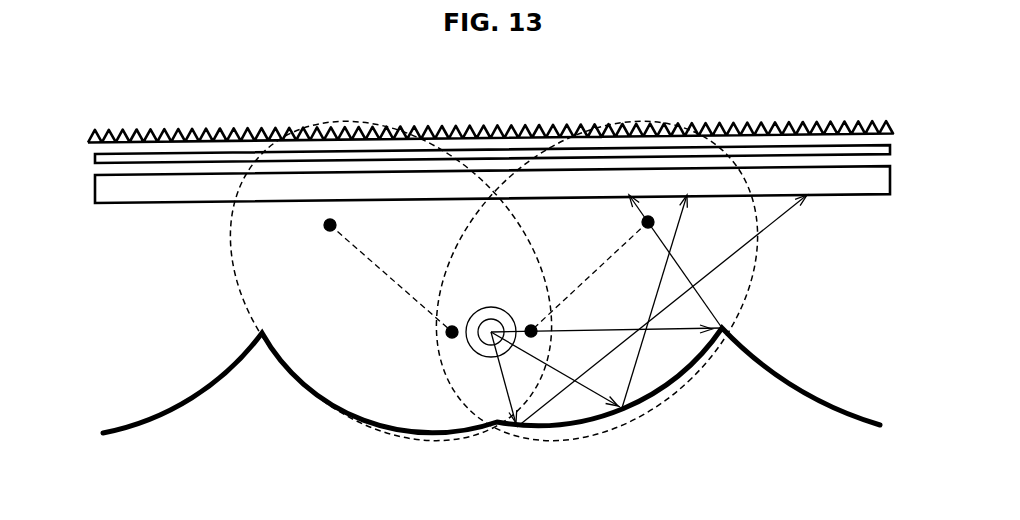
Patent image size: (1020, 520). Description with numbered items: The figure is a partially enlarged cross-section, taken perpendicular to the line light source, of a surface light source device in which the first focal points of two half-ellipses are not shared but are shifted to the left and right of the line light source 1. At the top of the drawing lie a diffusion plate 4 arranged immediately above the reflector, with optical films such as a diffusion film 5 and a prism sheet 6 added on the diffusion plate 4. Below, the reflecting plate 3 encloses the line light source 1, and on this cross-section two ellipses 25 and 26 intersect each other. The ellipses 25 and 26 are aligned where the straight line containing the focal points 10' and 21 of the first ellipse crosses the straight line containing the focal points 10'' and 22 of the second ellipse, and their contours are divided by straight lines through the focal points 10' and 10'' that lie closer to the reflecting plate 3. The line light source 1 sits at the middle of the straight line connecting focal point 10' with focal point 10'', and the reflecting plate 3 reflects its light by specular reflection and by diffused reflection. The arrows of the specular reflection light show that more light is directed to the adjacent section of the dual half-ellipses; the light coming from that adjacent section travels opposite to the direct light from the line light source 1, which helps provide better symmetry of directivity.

The line light source 1 is at (451, 348).
The reflecting plate 3 is at (491, 396).
The diffusion plate 4 is at (471, 199).
The diffusion film 5 is at (458, 160).
The prism sheet 6 is at (467, 124).
The focal point 10' is at (575, 314).
The focal point 10'' is at (405, 320).
The focal point 21 is at (593, 270).
The focal point 22 is at (387, 272).
The ellipse 25 is at (599, 281).
The ellipse 26 is at (391, 281).